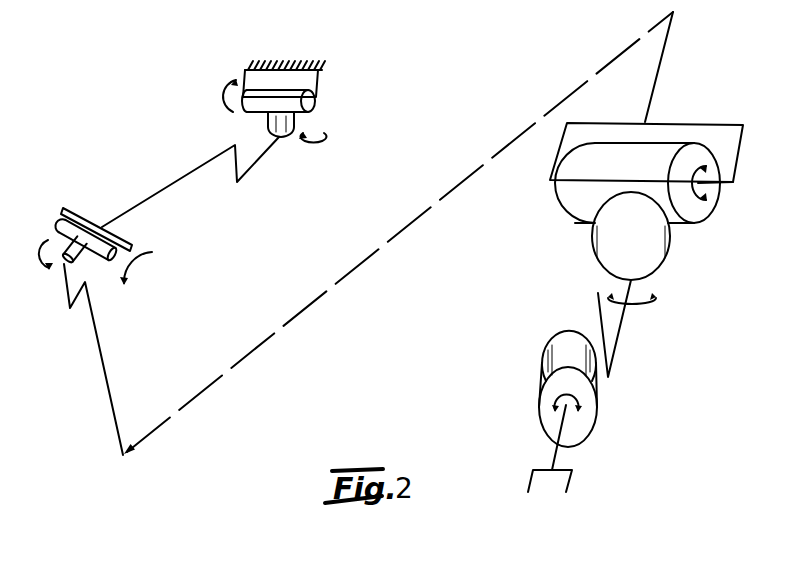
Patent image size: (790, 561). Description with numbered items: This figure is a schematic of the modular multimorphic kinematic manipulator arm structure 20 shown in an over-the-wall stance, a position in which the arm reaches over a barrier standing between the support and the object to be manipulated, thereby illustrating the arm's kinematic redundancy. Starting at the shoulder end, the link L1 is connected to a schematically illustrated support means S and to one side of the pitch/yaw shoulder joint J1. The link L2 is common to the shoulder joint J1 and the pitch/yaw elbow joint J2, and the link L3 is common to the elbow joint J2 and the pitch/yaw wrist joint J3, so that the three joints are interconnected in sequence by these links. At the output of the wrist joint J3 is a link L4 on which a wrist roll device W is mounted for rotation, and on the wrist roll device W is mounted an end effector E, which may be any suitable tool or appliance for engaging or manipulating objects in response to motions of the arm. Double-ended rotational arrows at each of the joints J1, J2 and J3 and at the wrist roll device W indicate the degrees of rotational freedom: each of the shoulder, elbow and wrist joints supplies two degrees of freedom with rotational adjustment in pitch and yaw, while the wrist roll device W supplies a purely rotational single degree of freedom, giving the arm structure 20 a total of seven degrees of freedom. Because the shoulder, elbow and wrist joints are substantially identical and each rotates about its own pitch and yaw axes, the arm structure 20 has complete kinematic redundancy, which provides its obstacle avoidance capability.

The support means S is at (292, 68).
The link L1 is at (320, 80).
The pitch/yaw shoulder joint J1 is at (320, 109).
The link L2 is at (168, 185).
The pitch/yaw elbow joint J2 is at (60, 205).
The link L3 is at (100, 348).
The modular multimorphic kinematic manipulator arm structure 20 is at (270, 266).
The pitch/yaw wrist joint J3 is at (548, 203).
The link L4 is at (622, 324).
The wrist roll device W is at (531, 371).
The end effector E is at (582, 470).